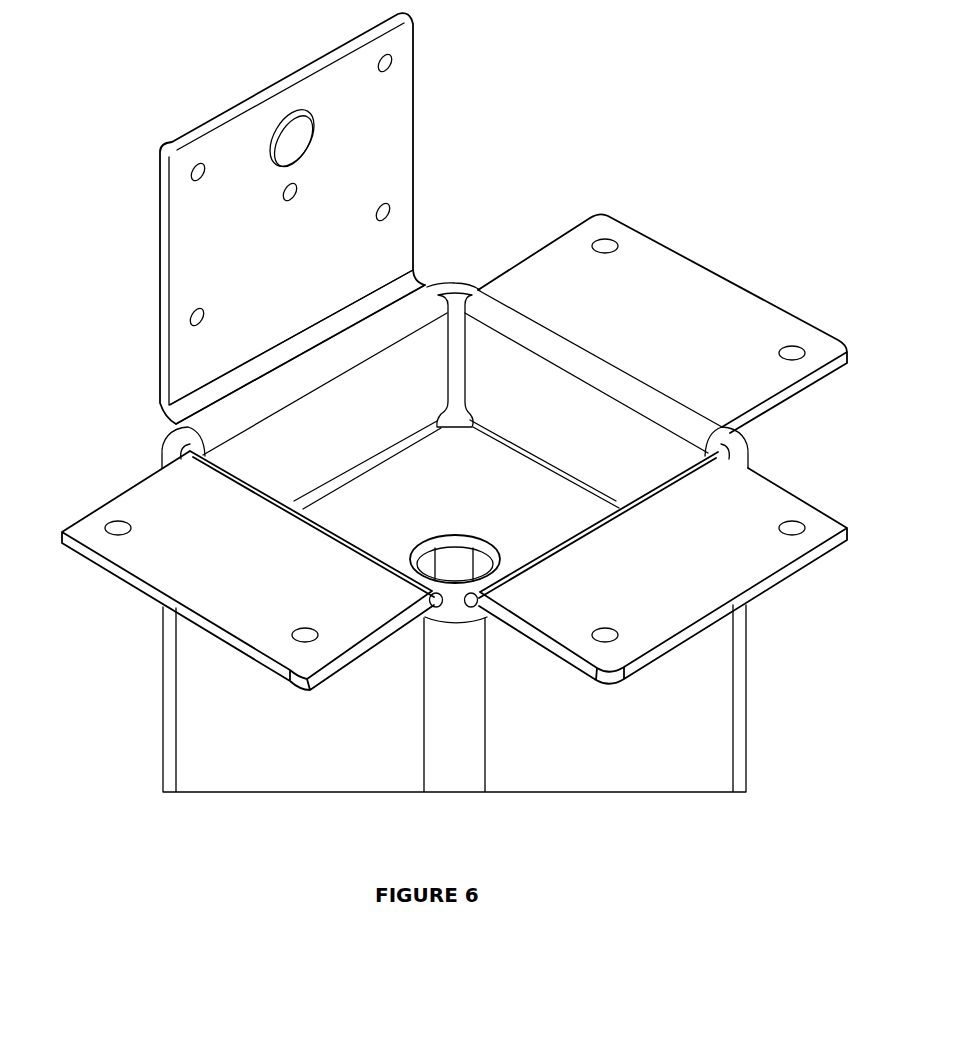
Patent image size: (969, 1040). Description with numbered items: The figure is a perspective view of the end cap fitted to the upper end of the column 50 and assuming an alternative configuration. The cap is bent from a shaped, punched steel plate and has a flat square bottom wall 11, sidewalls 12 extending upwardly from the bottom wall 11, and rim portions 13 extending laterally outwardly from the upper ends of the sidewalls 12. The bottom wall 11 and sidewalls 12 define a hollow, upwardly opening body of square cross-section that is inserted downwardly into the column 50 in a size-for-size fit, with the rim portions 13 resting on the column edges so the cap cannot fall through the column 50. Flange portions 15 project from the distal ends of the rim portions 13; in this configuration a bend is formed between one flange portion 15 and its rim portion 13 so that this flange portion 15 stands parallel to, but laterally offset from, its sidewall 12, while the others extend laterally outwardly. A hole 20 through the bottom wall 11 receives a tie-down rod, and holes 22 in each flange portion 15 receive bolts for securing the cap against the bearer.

The bottom wall 11 is at (543, 507).
The sidewalls 12 is at (298, 462).
The rim portions 13 is at (420, 288).
The flange portions 15 is at (388, 90).
The hole 20 is at (457, 568).
The holes 22 is at (608, 240).
The column 50 is at (243, 703).